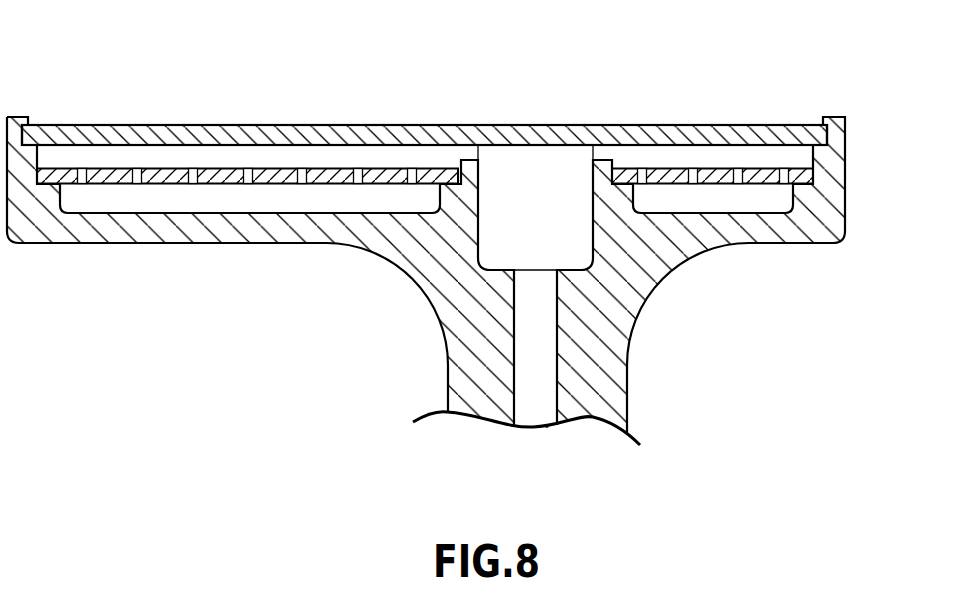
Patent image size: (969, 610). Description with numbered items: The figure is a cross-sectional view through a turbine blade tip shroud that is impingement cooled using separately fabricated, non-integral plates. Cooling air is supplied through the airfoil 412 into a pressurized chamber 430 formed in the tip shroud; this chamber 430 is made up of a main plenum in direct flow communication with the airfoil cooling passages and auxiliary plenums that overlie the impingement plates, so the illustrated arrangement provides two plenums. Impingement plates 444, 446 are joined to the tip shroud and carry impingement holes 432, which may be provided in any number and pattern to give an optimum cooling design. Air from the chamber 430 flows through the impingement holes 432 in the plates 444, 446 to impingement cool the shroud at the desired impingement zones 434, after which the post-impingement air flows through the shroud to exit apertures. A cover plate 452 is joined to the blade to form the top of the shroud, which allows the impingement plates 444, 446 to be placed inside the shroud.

The airfoil 412 is at (583, 350).
The chamber 430 is at (480, 239).
The impingement holes 432 is at (243, 168).
The impingement zones 434 is at (223, 230).
The impingement plate 444 is at (108, 186).
The impingement plate 446 is at (760, 184).
The cover plate 452 is at (570, 125).